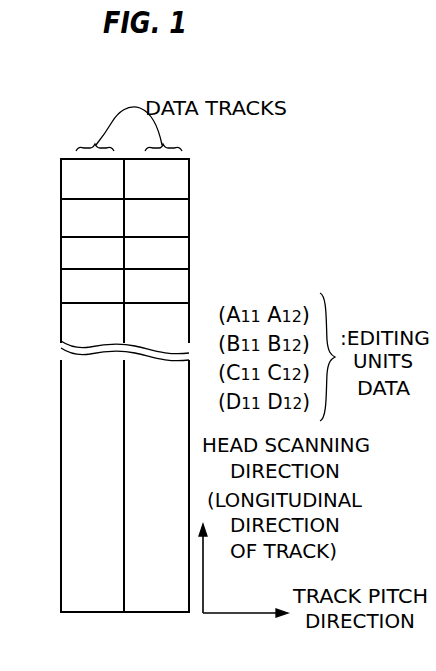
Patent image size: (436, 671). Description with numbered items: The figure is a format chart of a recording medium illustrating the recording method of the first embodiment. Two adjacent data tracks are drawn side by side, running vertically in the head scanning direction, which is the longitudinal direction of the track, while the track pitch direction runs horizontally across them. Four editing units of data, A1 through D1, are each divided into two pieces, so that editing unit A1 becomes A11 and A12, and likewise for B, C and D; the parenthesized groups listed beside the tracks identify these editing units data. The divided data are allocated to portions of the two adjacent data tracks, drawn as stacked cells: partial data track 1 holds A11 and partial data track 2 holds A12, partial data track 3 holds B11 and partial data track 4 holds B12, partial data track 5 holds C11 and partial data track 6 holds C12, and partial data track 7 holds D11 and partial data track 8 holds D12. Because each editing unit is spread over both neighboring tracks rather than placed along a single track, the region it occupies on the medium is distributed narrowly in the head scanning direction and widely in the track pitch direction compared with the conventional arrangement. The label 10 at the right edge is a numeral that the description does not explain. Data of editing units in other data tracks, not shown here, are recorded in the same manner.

The partial data track 1 is at (61, 283).
The partial data track 2 is at (189, 285).
The partial data track 3 is at (61, 253).
The partial data track 4 is at (189, 257).
The partial data track 5 is at (61, 217).
The partial data track 6 is at (189, 219).
The partial data track 7 is at (61, 191).
The partial data track 8 is at (189, 192).
The tape 10 is at (428, 252).